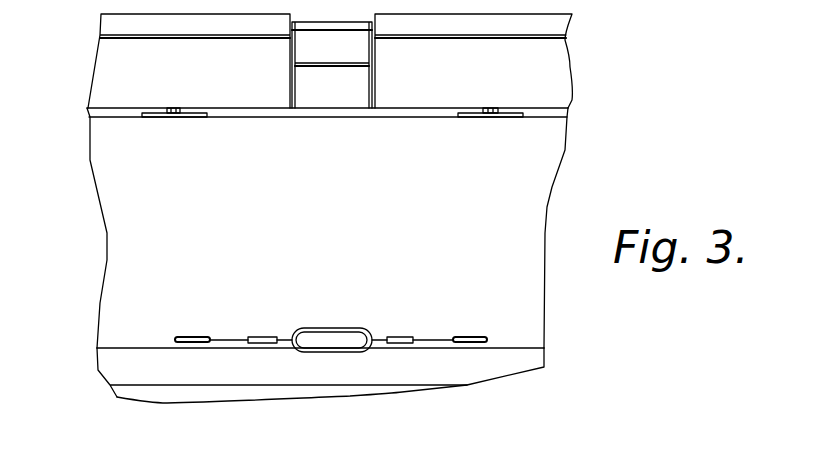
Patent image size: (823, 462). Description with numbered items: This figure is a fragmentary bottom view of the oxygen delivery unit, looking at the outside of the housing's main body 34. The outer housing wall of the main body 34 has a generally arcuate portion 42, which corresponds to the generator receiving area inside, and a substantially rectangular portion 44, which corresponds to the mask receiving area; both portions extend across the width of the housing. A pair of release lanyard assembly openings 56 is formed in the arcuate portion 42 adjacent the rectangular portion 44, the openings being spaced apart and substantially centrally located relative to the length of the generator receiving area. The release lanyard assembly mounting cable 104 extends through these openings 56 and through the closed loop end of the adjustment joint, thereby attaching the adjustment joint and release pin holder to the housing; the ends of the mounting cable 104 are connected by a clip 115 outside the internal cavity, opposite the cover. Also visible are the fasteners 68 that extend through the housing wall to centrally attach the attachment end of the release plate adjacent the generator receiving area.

The arcuate portion 42 is at (118, 182).
The main body 34 is at (118, 370).
The rectangular portion 44 is at (402, 392).
The fasteners 68 is at (170, 107).
The release lanyard assembly openings 56 is at (192, 337).
The release lanyard assembly mounting cable 104 is at (220, 338).
The clip 115 is at (325, 328).